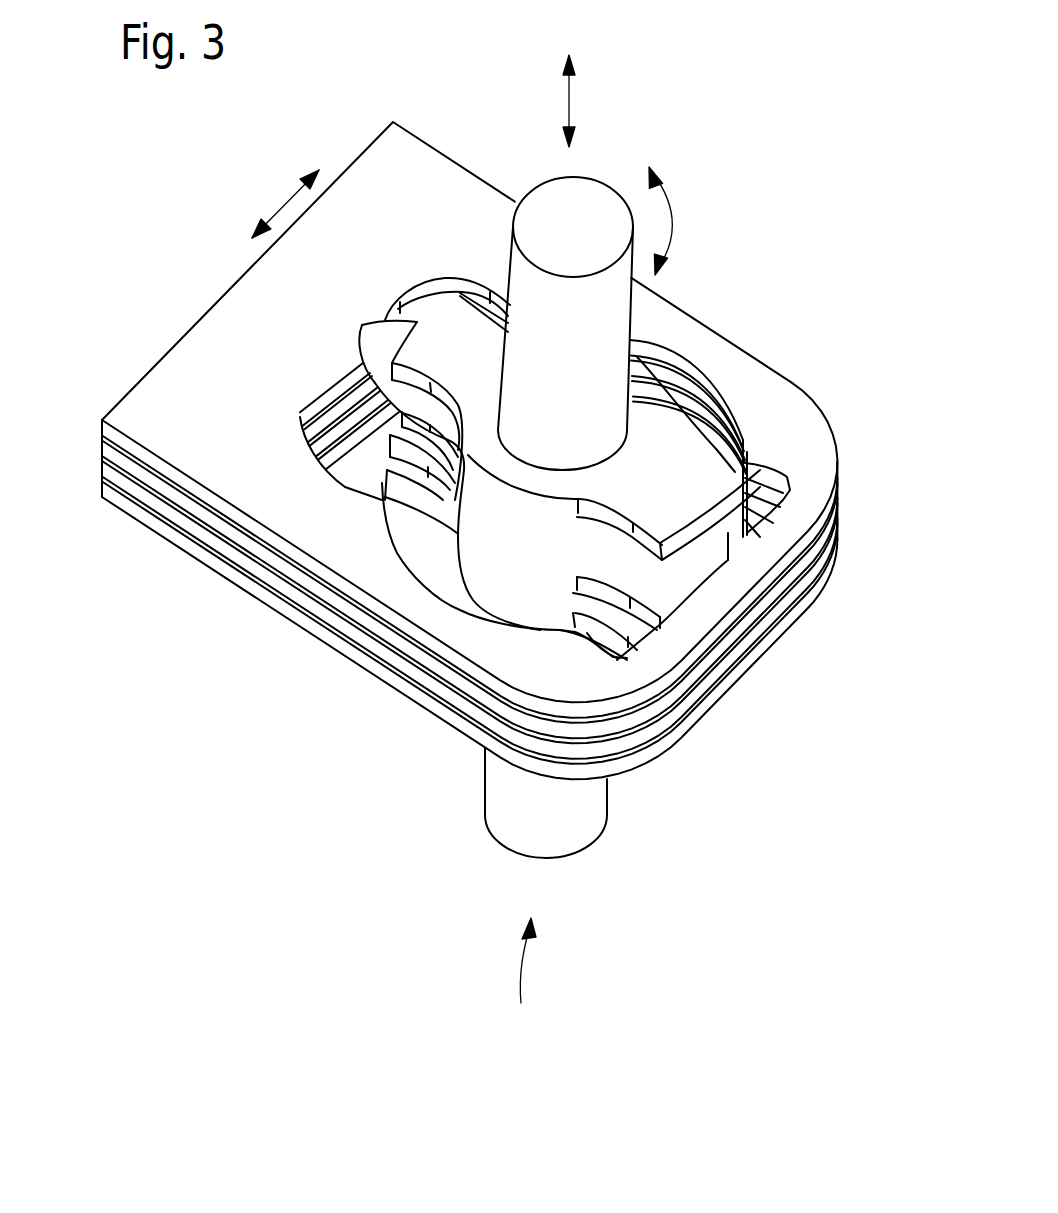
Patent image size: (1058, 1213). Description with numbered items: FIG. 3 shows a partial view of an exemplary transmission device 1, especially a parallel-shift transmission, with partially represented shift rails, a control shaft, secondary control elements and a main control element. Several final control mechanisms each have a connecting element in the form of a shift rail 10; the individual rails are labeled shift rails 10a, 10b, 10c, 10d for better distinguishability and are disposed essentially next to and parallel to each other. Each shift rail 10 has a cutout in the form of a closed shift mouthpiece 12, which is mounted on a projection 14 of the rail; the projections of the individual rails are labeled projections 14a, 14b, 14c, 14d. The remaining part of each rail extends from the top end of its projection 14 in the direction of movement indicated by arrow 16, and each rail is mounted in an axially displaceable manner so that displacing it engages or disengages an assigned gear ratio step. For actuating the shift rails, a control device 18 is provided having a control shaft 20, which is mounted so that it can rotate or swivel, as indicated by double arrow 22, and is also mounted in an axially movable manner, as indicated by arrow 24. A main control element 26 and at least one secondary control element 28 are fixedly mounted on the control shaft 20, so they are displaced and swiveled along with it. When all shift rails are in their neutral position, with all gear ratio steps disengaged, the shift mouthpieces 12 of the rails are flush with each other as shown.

The transmission device 1 is at (791, 208).
The shift rail 10 is at (688, 328).
The shift rail 10a is at (692, 660).
The shift rail 10b is at (662, 690).
The shift rail 10c is at (650, 732).
The shift rail 10d is at (625, 762).
The shift mouthpiece 12 is at (433, 550).
The projection 14 is at (432, 168).
The projection 14a is at (270, 542).
The projection 14b is at (217, 525).
The projection 14c is at (162, 513).
The projection 14d is at (107, 500).
The arrow 16 is at (285, 200).
The control device 18 is at (523, 977).
The control shaft 20 is at (584, 200).
The double arrow 22 is at (672, 207).
The arrow 24 is at (569, 97).
The main control element 26 is at (380, 338).
The secondary control element 28 is at (680, 513).